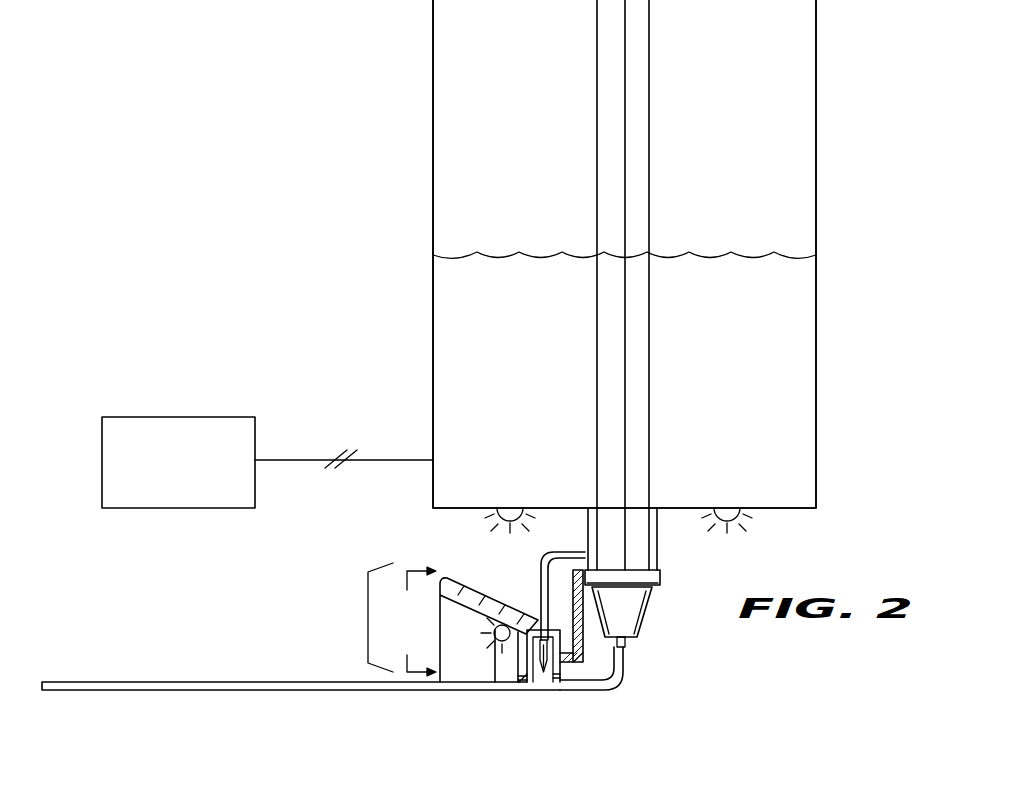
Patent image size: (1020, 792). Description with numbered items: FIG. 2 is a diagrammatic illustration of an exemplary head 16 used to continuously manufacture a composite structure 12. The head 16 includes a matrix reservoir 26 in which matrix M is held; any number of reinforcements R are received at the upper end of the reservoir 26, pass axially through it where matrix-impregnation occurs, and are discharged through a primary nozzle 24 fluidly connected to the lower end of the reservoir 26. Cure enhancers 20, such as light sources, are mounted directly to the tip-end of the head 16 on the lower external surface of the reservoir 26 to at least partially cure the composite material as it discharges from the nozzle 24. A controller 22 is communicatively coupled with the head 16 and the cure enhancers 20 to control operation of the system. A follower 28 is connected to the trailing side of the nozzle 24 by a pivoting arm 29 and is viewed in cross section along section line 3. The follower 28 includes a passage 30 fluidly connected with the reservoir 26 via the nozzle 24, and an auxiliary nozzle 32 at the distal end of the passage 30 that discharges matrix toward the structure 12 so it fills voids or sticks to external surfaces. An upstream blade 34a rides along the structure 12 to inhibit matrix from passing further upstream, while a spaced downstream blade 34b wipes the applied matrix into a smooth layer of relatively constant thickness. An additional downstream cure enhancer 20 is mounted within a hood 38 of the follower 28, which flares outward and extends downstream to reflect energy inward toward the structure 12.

The composite structure 12 is at (120, 691).
The head 16 is at (125, 197).
The cure enhancer 20 is at (510, 506).
The controller 22 is at (182, 474).
The nozzle 24 is at (633, 551).
The matrix reservoir 26 is at (730, 334).
The follower 28 is at (368, 617).
The pivoting arm 29 is at (584, 640).
The passage 30 is at (544, 560).
The auxiliary nozzle 32 is at (543, 698).
The upstream blade 34a is at (563, 680).
The downstream blade 34b is at (526, 680).
The hood 38 is at (460, 590).
The section line 3 is at (418, 621).
The reinforcement R is at (624, 137).
The matrix M is at (738, 258).